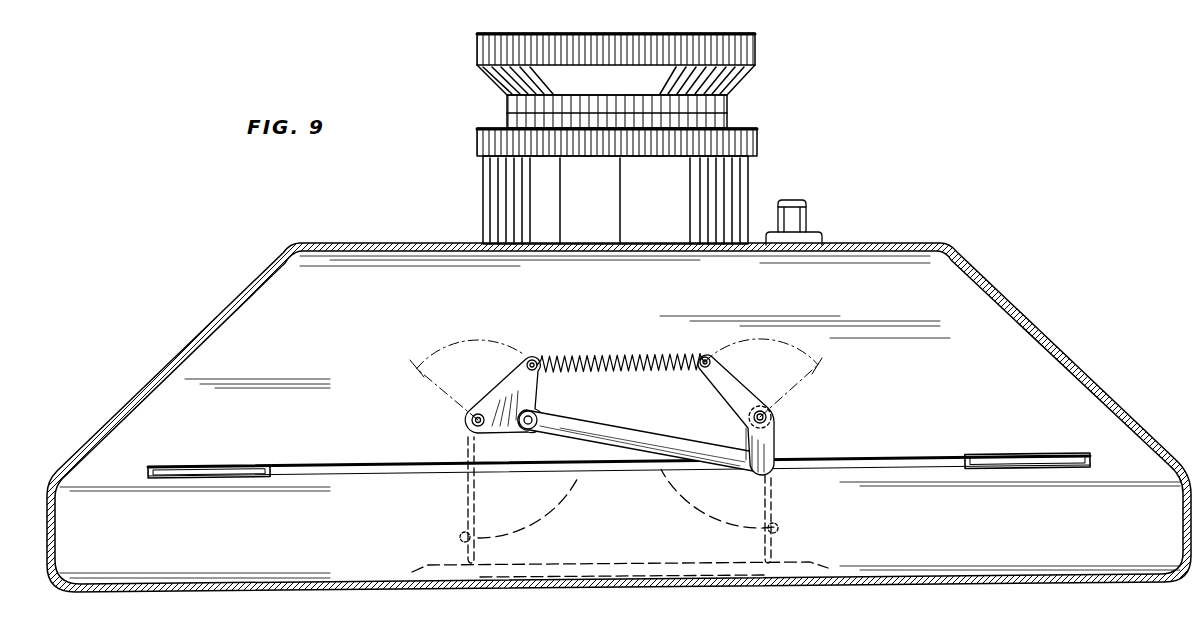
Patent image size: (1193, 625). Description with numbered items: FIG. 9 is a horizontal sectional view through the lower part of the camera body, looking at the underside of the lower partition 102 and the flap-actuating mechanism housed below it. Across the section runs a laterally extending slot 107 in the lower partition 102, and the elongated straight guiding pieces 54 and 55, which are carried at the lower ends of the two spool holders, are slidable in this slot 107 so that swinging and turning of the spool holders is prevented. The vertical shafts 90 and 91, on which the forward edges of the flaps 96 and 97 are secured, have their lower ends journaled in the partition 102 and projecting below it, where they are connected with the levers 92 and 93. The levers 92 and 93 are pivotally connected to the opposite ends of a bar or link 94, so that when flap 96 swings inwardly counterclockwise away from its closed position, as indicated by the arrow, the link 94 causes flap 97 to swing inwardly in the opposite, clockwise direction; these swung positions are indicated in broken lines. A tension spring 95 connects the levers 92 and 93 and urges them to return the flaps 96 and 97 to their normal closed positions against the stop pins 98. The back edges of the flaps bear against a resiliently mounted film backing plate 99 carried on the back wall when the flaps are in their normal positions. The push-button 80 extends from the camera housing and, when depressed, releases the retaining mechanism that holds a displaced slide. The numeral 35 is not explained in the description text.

The housing 35 is at (1027, 318).
The lower partition 102 is at (1029, 385).
The push-button 80 is at (808, 209).
The elongated straight guiding piece 54 is at (246, 467).
The elongated straight guiding piece 55 is at (990, 472).
The slot 107 is at (888, 462).
The vertical shaft 90 is at (467, 420).
The vertical shaft 91 is at (772, 415).
The lever 92 is at (500, 387).
The lever 93 is at (748, 392).
The bar or link 94 is at (636, 433).
The tension spring 95 is at (622, 356).
The flap 96 is at (467, 490).
The flap 97 is at (772, 492).
The stop pin 98 is at (459, 537).
The film backing plate 99 is at (612, 562).